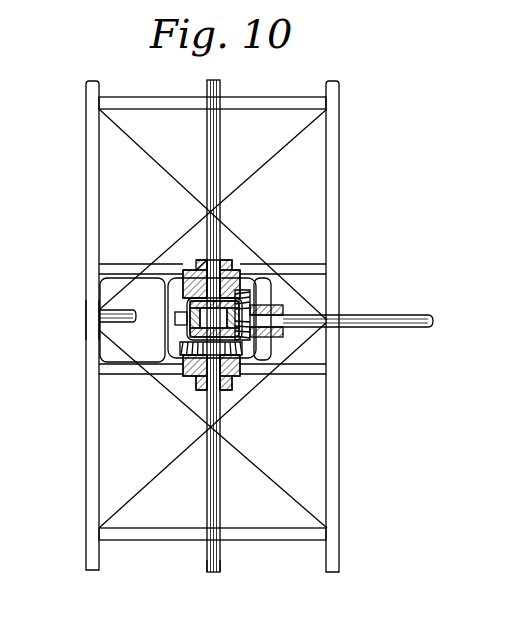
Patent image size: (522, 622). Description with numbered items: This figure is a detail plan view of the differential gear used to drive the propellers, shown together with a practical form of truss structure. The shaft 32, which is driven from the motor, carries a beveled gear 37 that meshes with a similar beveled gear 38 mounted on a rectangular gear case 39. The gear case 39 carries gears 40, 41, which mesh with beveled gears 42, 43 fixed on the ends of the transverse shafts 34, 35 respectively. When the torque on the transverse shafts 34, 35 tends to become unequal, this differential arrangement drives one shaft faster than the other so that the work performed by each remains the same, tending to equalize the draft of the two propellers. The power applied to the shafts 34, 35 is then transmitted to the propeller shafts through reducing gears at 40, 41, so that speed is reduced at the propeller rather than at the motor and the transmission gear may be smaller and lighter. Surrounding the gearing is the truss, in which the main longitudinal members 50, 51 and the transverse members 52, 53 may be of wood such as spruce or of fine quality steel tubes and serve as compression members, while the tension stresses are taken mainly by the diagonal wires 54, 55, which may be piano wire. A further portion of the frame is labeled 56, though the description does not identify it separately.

The shaft 32 is at (418, 322).
The transverse shaft 34 is at (208, 128).
The transverse shaft 35 is at (207, 560).
The beveled gear 37 is at (250, 352).
The beveled gear 38 is at (240, 376).
The rectangular gear case 39 is at (178, 271).
The gear 40 is at (178, 345).
The gear 41 is at (258, 296).
The beveled gear 42 is at (245, 276).
The beveled gear 43 is at (193, 386).
The main longitudinal member 50 is at (88, 445).
The main longitudinal member 51 is at (339, 471).
The transverse member 52 is at (282, 532).
The transverse member 53 is at (105, 99).
The wire 54 is at (281, 150).
The wire 55 is at (147, 153).
The frame bar portion 56 is at (92, 320).